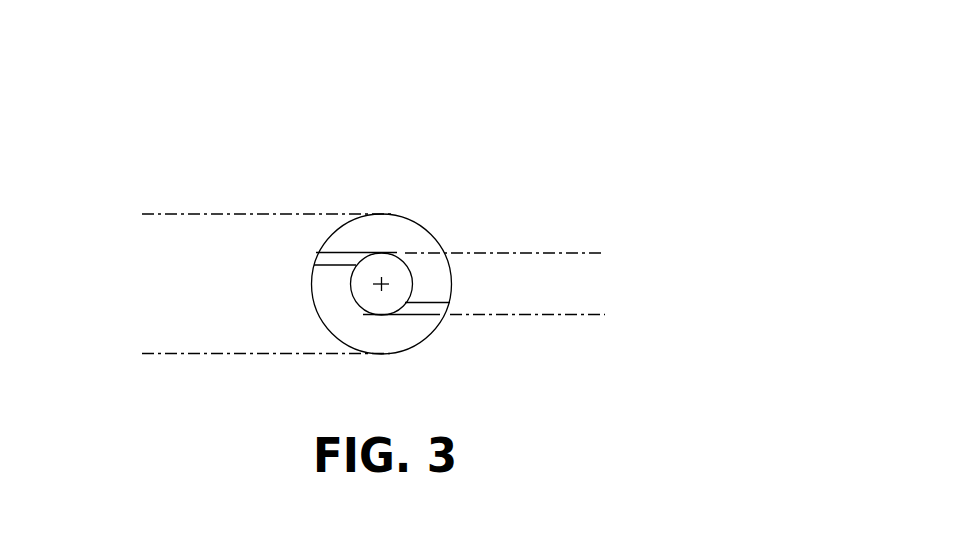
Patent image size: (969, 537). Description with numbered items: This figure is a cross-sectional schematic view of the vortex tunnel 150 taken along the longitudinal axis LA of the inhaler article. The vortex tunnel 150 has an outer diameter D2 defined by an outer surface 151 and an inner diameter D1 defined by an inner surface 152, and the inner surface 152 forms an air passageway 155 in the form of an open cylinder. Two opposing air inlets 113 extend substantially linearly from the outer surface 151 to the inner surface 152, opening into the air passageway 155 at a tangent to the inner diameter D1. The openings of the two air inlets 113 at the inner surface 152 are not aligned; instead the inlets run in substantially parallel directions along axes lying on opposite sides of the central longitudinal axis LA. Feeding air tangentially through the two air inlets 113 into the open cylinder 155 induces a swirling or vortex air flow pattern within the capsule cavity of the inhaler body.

The vortex tunnel 150 is at (400, 155).
The outer surface 151 is at (328, 223).
The inner surface 152 is at (365, 313).
The air inlets 113 is at (320, 261).
The air passageway 155 is at (404, 311).
The longitudinal axis LA is at (382, 283).
The inner diameter D1 is at (593, 253).
The outer diameter D2 is at (142, 228).